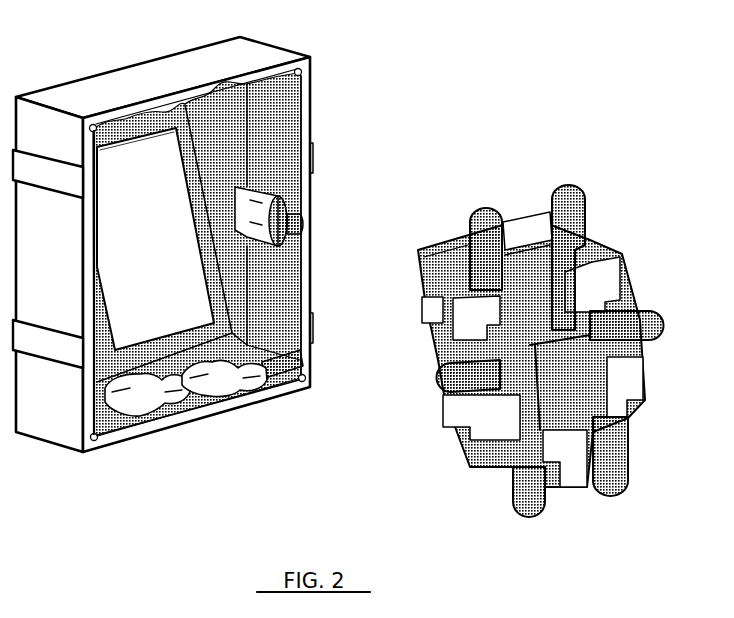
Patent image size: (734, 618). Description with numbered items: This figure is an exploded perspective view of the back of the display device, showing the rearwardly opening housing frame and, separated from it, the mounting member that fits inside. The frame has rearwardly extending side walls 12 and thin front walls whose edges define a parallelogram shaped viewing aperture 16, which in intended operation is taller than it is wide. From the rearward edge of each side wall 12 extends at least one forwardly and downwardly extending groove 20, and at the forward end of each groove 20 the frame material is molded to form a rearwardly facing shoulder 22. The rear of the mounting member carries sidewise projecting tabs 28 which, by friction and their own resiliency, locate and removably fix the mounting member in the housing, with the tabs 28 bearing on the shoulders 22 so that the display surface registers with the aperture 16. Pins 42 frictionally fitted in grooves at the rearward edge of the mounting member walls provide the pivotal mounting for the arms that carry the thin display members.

The side walls 12 is at (246, 50).
The aperture 16 is at (155, 239).
The groove 20 is at (252, 396).
The shoulders 22 is at (283, 214).
The tabs 28 is at (487, 218).
The pins 42 is at (630, 314).